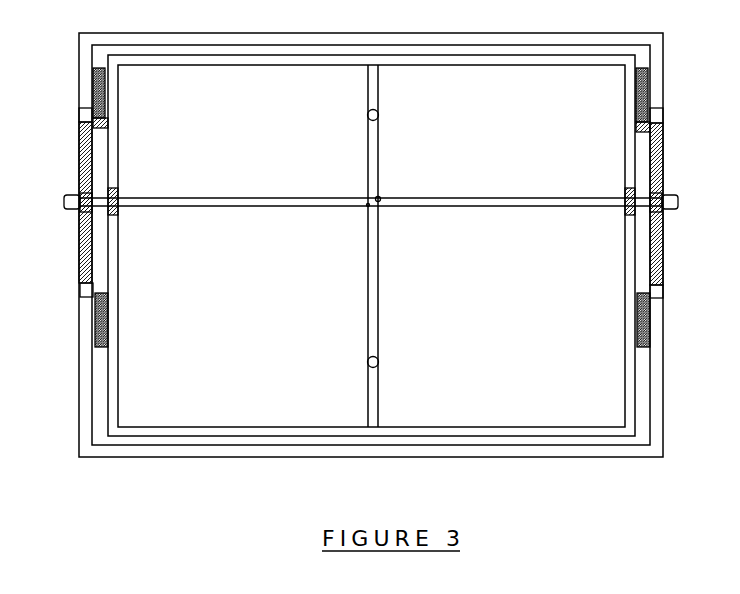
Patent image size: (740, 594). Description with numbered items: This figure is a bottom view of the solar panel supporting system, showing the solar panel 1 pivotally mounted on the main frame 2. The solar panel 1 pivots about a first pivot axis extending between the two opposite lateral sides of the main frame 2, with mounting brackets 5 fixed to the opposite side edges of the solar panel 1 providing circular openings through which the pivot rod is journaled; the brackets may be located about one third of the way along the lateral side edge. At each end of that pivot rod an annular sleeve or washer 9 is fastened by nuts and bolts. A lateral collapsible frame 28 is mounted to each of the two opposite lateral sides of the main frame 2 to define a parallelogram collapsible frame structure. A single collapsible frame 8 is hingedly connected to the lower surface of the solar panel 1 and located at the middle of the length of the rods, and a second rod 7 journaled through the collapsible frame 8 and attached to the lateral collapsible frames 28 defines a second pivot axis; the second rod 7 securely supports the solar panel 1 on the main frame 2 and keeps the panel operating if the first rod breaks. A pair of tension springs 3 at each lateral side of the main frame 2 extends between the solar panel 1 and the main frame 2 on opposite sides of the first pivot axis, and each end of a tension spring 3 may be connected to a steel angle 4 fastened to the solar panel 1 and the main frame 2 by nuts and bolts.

The solar panel 1 is at (283, 68).
The main frame 2 is at (79, 90).
The tension spring 3 is at (106, 95).
The steel angle 4 is at (93, 70).
The mounting bracket 5 is at (118, 193).
The second rod 7 is at (280, 207).
The collapsible frame 8 is at (378, 222).
The annular sleeve or washer 9 is at (74, 194).
The lateral collapsible frame 28 is at (79, 243).